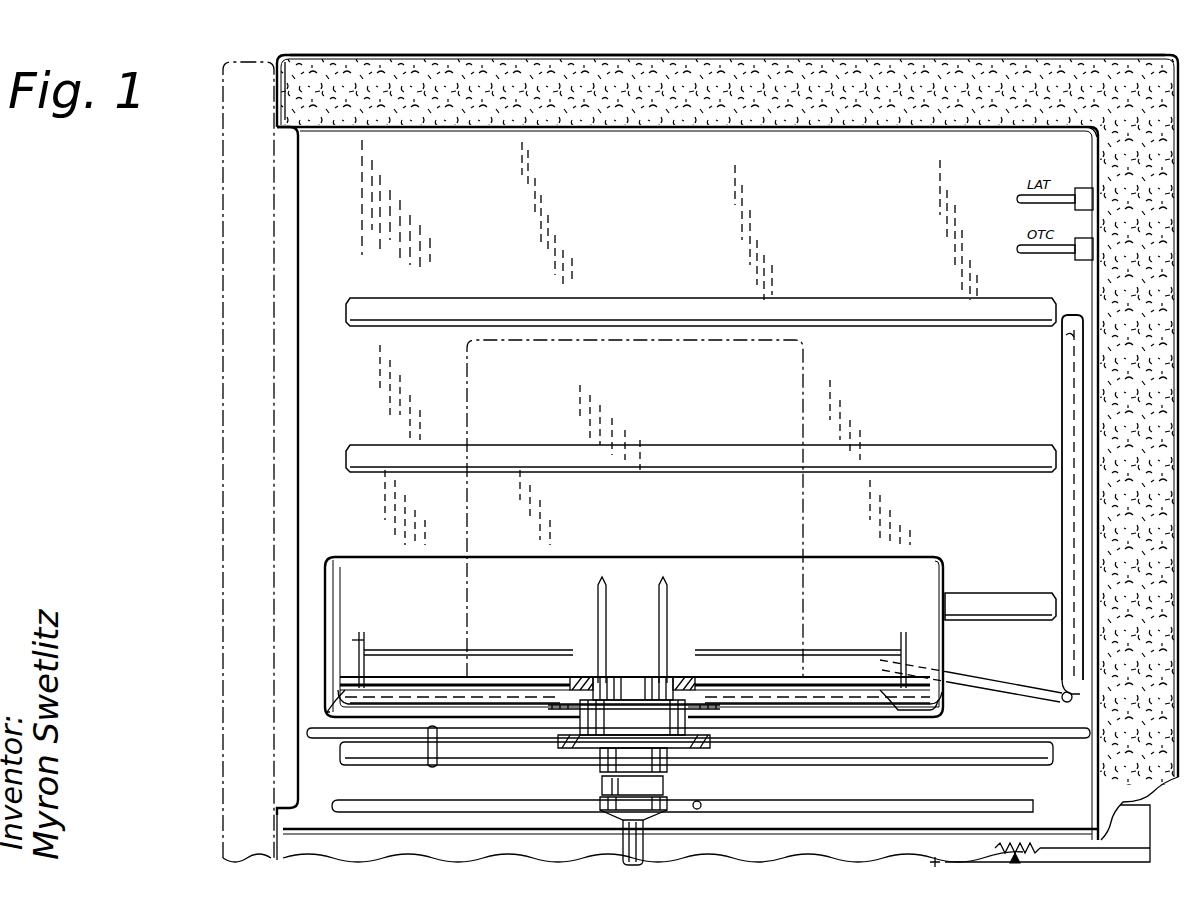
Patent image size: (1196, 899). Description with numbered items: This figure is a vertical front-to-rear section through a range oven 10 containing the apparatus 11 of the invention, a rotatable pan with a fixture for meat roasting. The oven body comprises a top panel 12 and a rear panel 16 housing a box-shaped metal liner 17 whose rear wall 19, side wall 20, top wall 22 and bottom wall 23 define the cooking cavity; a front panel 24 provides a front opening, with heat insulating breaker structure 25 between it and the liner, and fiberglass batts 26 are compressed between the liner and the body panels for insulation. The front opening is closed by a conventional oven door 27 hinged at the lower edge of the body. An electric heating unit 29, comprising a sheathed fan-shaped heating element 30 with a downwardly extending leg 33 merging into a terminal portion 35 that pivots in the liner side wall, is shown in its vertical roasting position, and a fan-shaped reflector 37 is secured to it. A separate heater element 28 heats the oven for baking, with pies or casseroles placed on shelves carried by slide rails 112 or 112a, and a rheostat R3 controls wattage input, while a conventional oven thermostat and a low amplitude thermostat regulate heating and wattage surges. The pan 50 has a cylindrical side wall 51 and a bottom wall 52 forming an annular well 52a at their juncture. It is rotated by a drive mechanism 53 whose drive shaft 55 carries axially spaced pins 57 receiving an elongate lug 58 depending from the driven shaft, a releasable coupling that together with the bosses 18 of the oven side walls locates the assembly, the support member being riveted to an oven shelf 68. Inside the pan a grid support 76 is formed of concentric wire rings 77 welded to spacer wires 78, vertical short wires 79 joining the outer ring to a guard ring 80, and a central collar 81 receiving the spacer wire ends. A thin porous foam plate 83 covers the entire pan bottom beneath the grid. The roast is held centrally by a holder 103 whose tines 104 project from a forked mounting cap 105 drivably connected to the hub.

The range oven 10 is at (262, 212).
The apparatus 11 is at (396, 538).
The top panel 12 is at (632, 56).
The rear panel 16 is at (1177, 520).
The metal liner 17 is at (656, 128).
The bosses 18 is at (934, 760).
The rear wall 19 is at (1094, 142).
The side wall 20 is at (500, 182).
The top wall 22 is at (931, 128).
The bottom wall 23 is at (828, 833).
The front panel 24 is at (295, 96).
The heat insulating breaker structure 25 is at (1150, 370).
The fiberglass batts 26 is at (814, 100).
The oven door 27 is at (222, 420).
The heating element 28 is at (470, 806).
The electric heating unit 29 is at (1058, 388).
The electric heating element 30 is at (1070, 496).
The leg 33 is at (992, 684).
The terminal portion 35 is at (880, 656).
The reflector 37 is at (1074, 316).
The pan 50 is at (840, 555).
The cylindrical side wall 51 is at (946, 576).
The bottom wall 52 is at (840, 700).
The well 52a is at (930, 718).
The drive mechanism 53 is at (692, 768).
The drive shaft 55 is at (640, 846).
The pins 57 is at (605, 786).
The lug 58 is at (665, 790).
The oven shelf 68 is at (336, 738).
The grid support 76 is at (355, 640).
The wire rings 77 is at (530, 680).
The spacer wires 78 is at (484, 680).
The vertical short wires 79 is at (371, 630).
The guard ring 80 is at (426, 648).
The collar 81 is at (692, 665).
The porous plate 83 is at (340, 674).
The holder 103 is at (672, 596).
The tines 104 is at (609, 600).
The forked mounting cap 105 is at (628, 680).
The slide rail 112 is at (432, 298).
The slide rail 112a is at (408, 436).
The rheostat R3 is at (1028, 842).